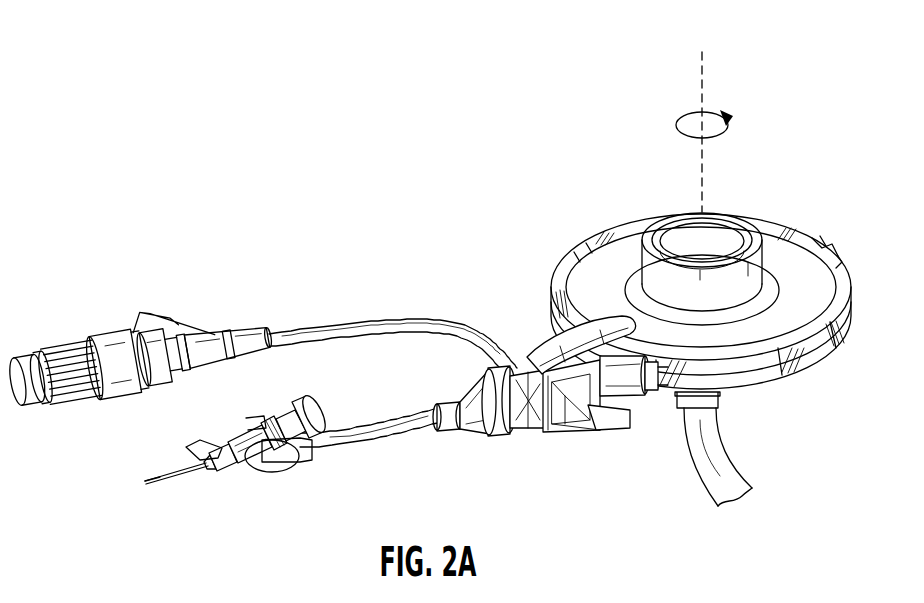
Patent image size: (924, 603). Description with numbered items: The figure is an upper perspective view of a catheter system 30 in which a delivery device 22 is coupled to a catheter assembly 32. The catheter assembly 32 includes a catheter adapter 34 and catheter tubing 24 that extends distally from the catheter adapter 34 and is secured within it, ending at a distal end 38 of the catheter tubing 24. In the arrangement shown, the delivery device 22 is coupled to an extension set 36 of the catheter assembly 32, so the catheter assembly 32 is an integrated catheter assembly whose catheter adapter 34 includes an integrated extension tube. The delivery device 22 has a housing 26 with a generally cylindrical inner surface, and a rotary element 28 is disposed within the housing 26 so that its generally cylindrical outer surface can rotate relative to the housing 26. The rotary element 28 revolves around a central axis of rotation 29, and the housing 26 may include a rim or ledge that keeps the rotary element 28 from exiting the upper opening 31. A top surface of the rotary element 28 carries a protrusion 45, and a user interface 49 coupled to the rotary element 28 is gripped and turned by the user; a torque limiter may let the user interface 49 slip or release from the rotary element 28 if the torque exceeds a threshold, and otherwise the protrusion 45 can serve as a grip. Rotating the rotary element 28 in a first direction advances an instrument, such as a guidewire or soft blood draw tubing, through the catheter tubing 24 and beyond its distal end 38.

The delivery device 22 is at (724, 328).
The catheter tubing 24 is at (172, 480).
The housing 26 is at (815, 366).
The rotary element 28 is at (608, 258).
The central axis of rotation 29 is at (704, 88).
The catheter system 30 is at (88, 190).
The upper opening 31 is at (822, 284).
The catheter assembly 32 is at (302, 395).
The catheter adapter 34 is at (250, 436).
The extension set 36 is at (478, 420).
The distal end of the catheter tubing 38 is at (150, 482).
The protrusion 45 is at (714, 237).
The user interface 49 is at (783, 236).